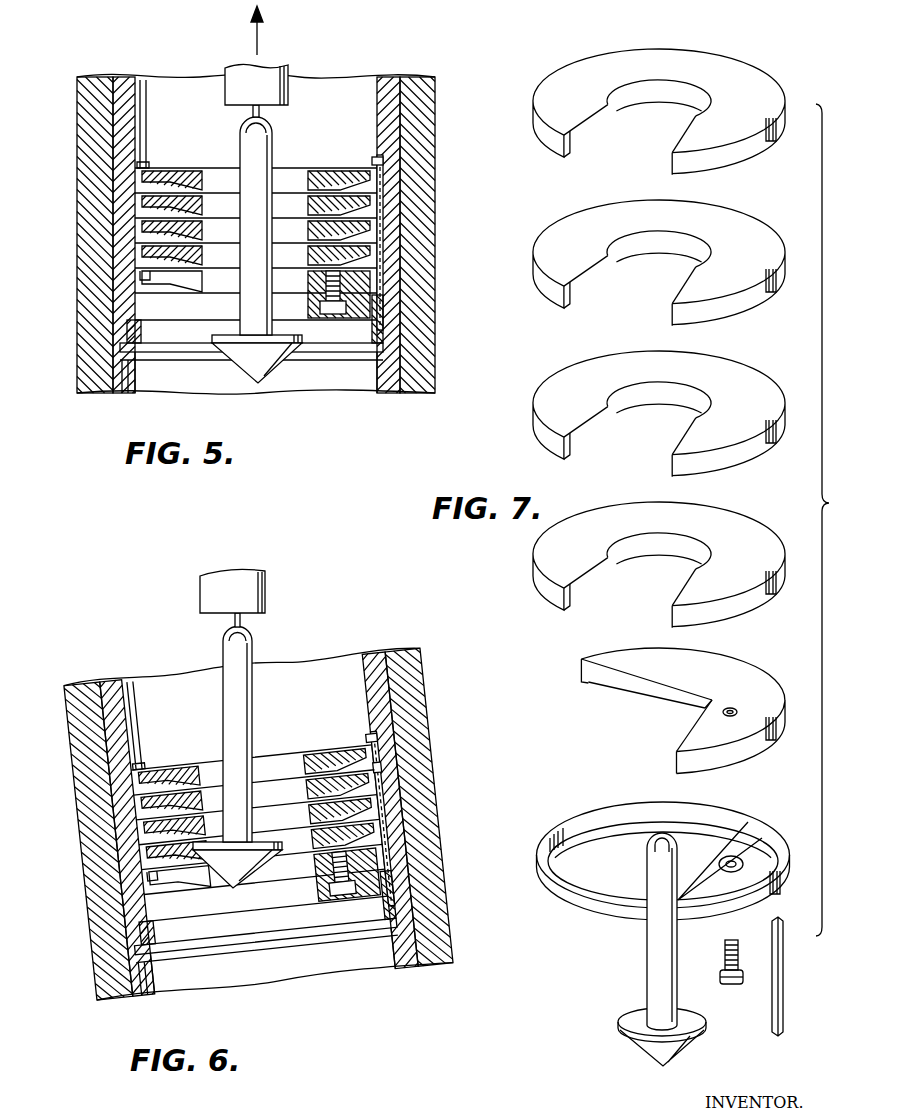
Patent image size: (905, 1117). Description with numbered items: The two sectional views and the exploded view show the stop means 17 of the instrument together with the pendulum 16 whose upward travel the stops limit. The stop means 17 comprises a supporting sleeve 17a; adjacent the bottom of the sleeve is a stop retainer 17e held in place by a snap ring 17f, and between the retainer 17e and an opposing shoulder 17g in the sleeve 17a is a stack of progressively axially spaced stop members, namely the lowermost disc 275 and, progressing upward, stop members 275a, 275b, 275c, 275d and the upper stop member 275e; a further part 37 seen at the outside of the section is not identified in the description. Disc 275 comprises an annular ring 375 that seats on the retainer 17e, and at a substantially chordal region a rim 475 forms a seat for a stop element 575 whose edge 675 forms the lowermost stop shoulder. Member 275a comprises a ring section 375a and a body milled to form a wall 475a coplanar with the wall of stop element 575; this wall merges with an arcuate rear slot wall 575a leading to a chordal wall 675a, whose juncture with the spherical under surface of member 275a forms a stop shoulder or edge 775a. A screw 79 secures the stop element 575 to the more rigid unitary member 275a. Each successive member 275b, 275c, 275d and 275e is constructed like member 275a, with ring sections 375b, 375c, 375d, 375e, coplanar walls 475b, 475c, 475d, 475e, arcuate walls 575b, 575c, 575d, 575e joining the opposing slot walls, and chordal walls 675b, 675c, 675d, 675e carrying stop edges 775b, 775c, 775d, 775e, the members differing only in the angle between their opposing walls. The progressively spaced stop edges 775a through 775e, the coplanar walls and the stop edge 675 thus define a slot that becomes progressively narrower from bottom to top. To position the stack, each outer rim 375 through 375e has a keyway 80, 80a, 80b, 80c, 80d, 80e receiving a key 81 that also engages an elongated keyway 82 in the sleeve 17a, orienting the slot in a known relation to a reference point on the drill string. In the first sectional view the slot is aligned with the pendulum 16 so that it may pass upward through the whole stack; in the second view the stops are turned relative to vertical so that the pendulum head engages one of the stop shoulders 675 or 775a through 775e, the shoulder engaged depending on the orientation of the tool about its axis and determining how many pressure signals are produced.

In FIG. 5, the pendulum 16 is at (244, 150).
In FIG. 6, the pendulum 16 is at (224, 652).
In FIG. 5, the stop means 17 is at (130, 212).
In FIG. 6, the stop means 17 is at (130, 818).
In FIG. 5, the supporting sleeve 17a is at (386, 82).
In FIG. 6, the supporting sleeve 17a is at (371, 661).
In FIG. 5, the stop retainer 17e is at (386, 332).
In FIG. 6, the stop retainer 17e is at (393, 906).
In FIG. 5, the snap ring 17f is at (380, 350).
In FIG. 6, the snap ring 17f is at (403, 938).
In FIG. 5, the opposing shoulder 17g is at (140, 170).
In FIG. 6, the opposing shoulder 17g is at (141, 777).
In FIG. 5, the outer housing 37 is at (92, 295).
In FIG. 6, the outer housing 37 is at (99, 918).
In FIG. 5, the screw 79 is at (336, 300).
In FIG. 6, the screw 79 is at (346, 892).
In FIG. 7, the screw 79 is at (731, 987).
In FIG. 7, the keyway 80 is at (780, 883).
In FIG. 7, the keyway 80a is at (777, 740).
In FIG. 7, the keyway 80b is at (770, 593).
In FIG. 7, the keyway 80c is at (770, 447).
In FIG. 7, the keyway 80d is at (771, 290).
In FIG. 7, the keyway 80e is at (773, 137).
In FIG. 5, the key 81 is at (384, 160).
In FIG. 6, the key 81 is at (380, 731).
In FIG. 7, the key 81 is at (784, 955).
In FIG. 6, the elongated keyway 82 is at (383, 772).
In FIG. 7, the disc 275 is at (748, 822).
In FIG. 7, the stop member 275a is at (752, 668).
In FIG. 7, the stop member 275b is at (742, 523).
In FIG. 6, the stop member 275c is at (318, 818).
In FIG. 7, the stop member 275c is at (732, 360).
In FIG. 5, the stop member 275d is at (320, 209).
In FIG. 6, the stop member 275d is at (311, 790).
In FIG. 7, the stop member 275d is at (741, 222).
In FIG. 5, the upper stop member 275e is at (336, 172).
In FIG. 6, the upper stop member 275e is at (340, 770).
In FIG. 7, the upper stop member 275e is at (770, 78).
In FIG. 7, the annular ring 375 is at (610, 918).
In FIG. 7, the ring section 375a is at (583, 688).
In FIG. 7, the ring section 375b is at (541, 571).
In FIG. 7, the ring section 375c is at (553, 446).
In FIG. 7, the ring section 375d is at (565, 300).
In FIG. 7, the ring section 375e is at (568, 157).
In FIG. 7, the rim 475 is at (700, 913).
In FIG. 5, the wall 475a is at (306, 268).
In FIG. 7, the wall 475a is at (680, 745).
In FIG. 7, the wall 475b is at (682, 589).
In FIG. 7, the wall 475c is at (695, 419).
In FIG. 7, the wall 475d is at (680, 290).
In FIG. 7, the wall 475e is at (675, 148).
In FIG. 7, the stop element 575 is at (745, 845).
In FIG. 7, the arcuate rear slot wall 575a is at (698, 701).
In FIG. 7, the arcuate wall 575b is at (700, 553).
In FIG. 7, the arcuate wall 575c is at (682, 393).
In FIG. 7, the arcuate wall 575d is at (680, 238).
In FIG. 7, the arcuate wall 575e is at (680, 86).
In FIG. 5, the edge 675 is at (308, 322).
In FIG. 6, the edge 675 is at (312, 895).
In FIG. 5, the chordal wall 675a is at (185, 283).
In FIG. 7, the chordal wall 675a is at (630, 677).
In FIG. 7, the chordal wall 675b is at (615, 543).
In FIG. 7, the chordal wall 675c is at (582, 413).
In FIG. 7, the chordal wall 675d is at (606, 255).
In FIG. 7, the chordal wall 675e is at (606, 110).
In FIG. 5, the stop shoulder 775a is at (174, 292).
In FIG. 7, the stop shoulder 775a is at (618, 693).
In FIG. 7, the stop shoulder 775b is at (583, 562).
In FIG. 7, the stop shoulder 775c is at (600, 420).
In FIG. 7, the stop shoulder 775d is at (612, 263).
In FIG. 7, the stop shoulder 775e is at (603, 121).